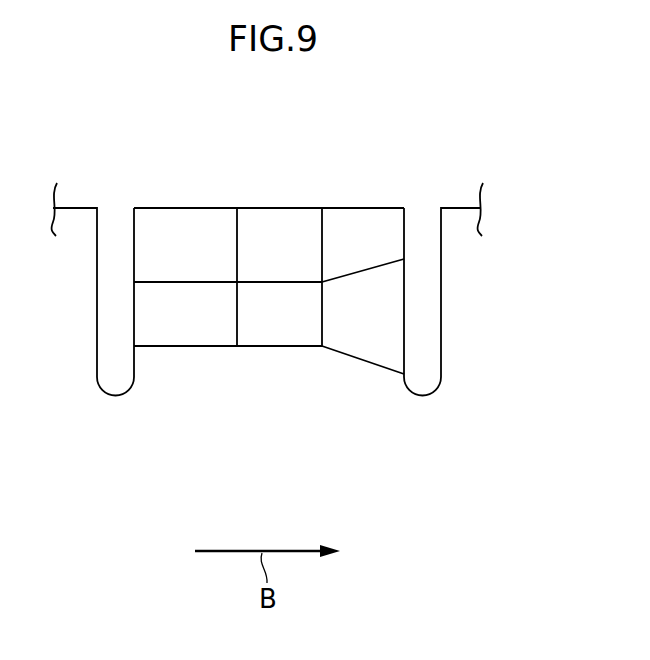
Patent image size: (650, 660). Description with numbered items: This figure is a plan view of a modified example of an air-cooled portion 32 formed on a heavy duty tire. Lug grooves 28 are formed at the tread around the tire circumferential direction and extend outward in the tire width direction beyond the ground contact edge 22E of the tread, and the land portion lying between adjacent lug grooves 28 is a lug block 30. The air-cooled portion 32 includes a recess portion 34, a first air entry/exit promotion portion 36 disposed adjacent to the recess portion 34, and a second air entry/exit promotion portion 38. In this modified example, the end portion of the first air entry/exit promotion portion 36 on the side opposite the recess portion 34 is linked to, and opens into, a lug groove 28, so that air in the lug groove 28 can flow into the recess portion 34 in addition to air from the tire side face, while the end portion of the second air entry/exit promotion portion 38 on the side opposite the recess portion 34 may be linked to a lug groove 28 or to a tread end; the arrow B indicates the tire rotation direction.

The lug groove 28 is at (133, 233).
The lug block 30 is at (269, 299).
The ground contact edge 22E is at (357, 207).
The air-cooled portion 32 is at (300, 384).
The recess portion 34 is at (283, 348).
The first air entry/exit promotion portion 36 is at (358, 367).
The second air entry/exit promotion portion 38 is at (237, 243).